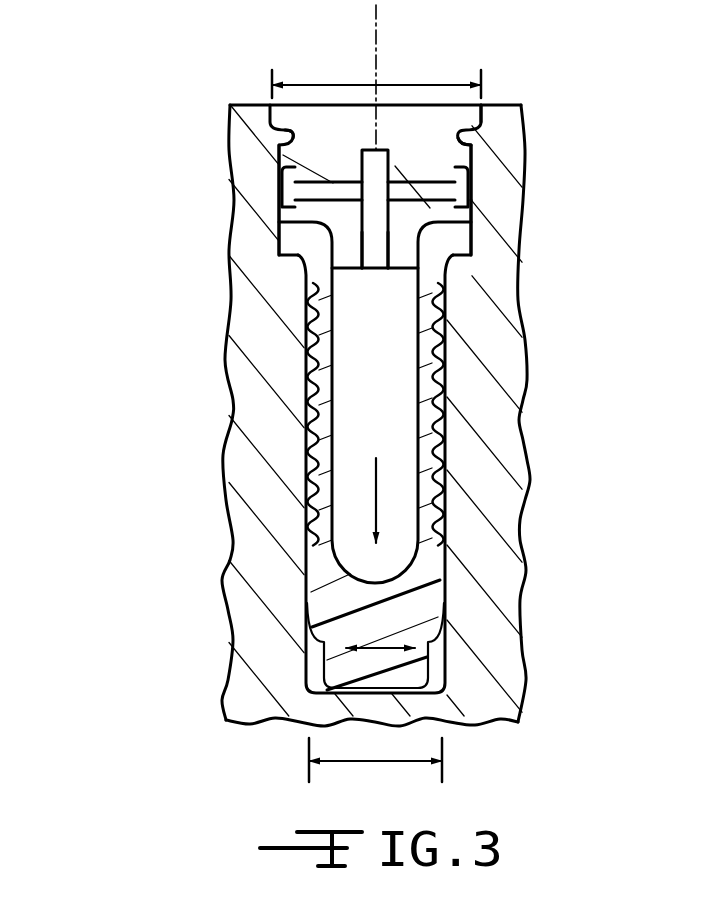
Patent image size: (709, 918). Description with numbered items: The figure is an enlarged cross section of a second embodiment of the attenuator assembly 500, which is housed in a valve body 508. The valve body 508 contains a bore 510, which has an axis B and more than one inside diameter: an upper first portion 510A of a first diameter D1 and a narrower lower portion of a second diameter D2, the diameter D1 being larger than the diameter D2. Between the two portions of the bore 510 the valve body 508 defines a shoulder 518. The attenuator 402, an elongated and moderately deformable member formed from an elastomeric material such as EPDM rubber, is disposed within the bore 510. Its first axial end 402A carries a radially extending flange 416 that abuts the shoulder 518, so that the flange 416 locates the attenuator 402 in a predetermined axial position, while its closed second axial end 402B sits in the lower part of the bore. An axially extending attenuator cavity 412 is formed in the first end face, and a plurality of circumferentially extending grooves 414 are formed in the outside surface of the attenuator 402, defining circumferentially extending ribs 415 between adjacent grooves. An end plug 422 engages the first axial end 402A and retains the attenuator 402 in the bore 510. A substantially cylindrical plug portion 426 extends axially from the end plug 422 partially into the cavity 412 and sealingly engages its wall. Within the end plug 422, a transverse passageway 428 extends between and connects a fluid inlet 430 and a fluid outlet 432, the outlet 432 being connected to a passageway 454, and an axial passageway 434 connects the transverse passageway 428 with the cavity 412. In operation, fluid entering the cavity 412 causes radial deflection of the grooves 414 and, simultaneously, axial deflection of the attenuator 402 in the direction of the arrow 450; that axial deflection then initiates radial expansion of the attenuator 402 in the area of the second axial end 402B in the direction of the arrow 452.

The attenuator assembly 500 is at (121, 99).
The valve body 508 is at (505, 682).
The bore 510 is at (396, 157).
The first portion 510A is at (338, 190).
The shoulder 518 is at (470, 245).
The flange 416 is at (277, 240).
The end plug 422 is at (485, 112).
The passageway 454 is at (480, 228).
The first axial end 402A is at (467, 195).
The transverse passageway 428 is at (362, 180).
The axial passageway 434 is at (370, 237).
The plug portion 426 is at (437, 331).
The fluid inlet 430 is at (280, 172).
The fluid outlet 432 is at (470, 172).
The attenuator 402 is at (448, 579).
The attenuator cavity 412 is at (437, 340).
The circumferentially extending grooves 414 is at (304, 390).
The circumferentially extending ribs 415 is at (303, 455).
The arrow 452 is at (388, 647).
The second axial end 402B is at (412, 694).
The arrow 450 is at (376, 486).
The axis B is at (380, 22).
The first diameter D1 is at (444, 82).
The second diameter D2 is at (382, 760).